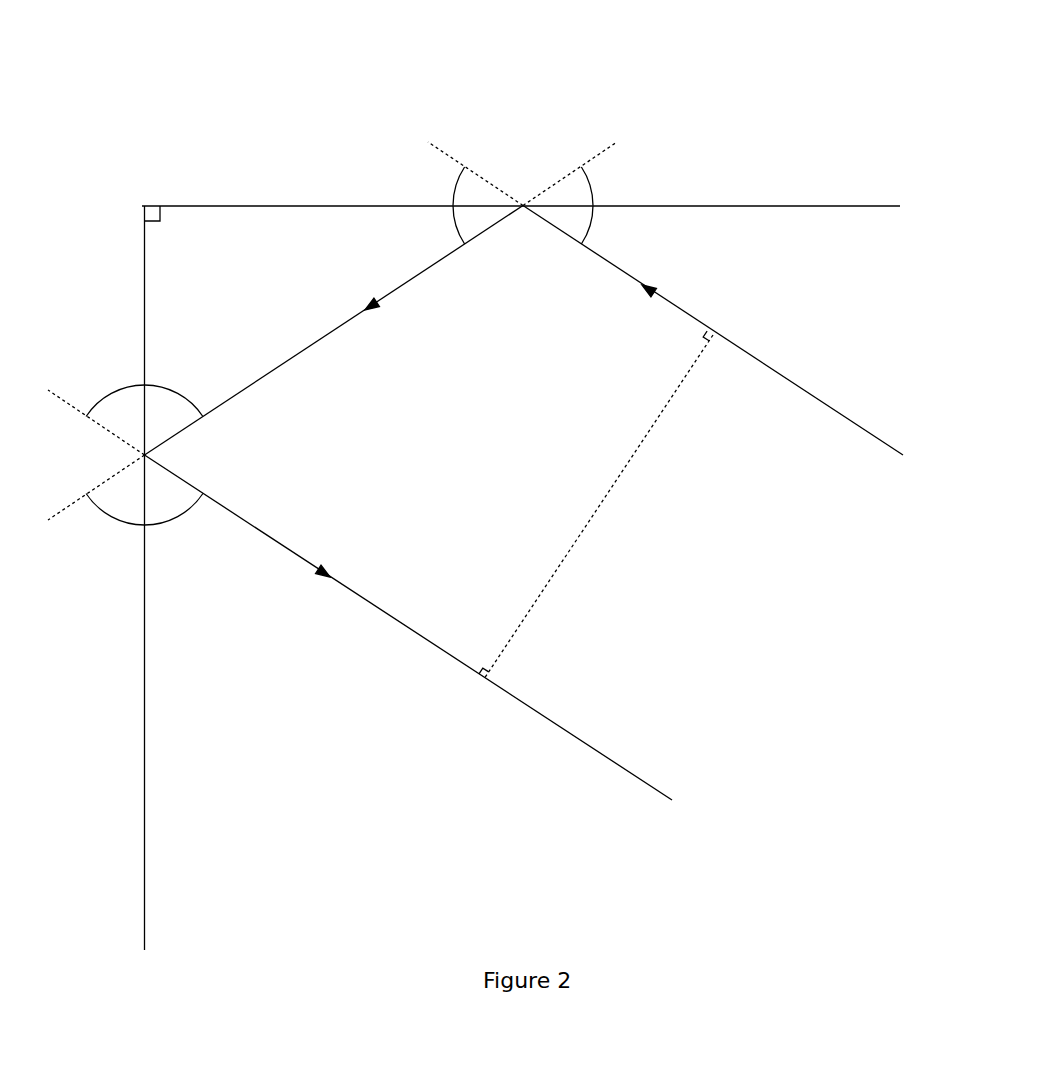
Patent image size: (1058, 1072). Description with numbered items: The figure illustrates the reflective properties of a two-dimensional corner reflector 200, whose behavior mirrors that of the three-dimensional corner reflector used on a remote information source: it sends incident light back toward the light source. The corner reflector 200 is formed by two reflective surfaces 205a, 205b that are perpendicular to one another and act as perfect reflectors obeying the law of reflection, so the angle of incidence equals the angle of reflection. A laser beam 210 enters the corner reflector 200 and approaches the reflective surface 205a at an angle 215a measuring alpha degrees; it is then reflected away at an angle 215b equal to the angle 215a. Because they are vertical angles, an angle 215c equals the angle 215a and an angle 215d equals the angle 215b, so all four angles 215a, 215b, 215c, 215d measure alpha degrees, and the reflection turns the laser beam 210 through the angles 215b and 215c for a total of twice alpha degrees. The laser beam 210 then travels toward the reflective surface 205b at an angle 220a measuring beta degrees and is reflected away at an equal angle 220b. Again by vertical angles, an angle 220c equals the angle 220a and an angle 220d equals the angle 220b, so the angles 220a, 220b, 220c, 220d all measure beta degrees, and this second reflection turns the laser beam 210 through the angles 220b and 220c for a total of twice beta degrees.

The two-dimensional corner reflector 200 is at (538, 80).
The reflective surface 205a is at (774, 206).
The reflective surface 205b is at (145, 765).
The laser beam 210 is at (321, 338).
The angle 215a is at (563, 222).
The angle 215b is at (485, 222).
The angle 215c is at (485, 188).
The angle 215d is at (563, 188).
The angle 220a is at (165, 389).
The angle 220b is at (165, 521).
The angle 220c is at (129, 521).
The angle 220d is at (123, 389).